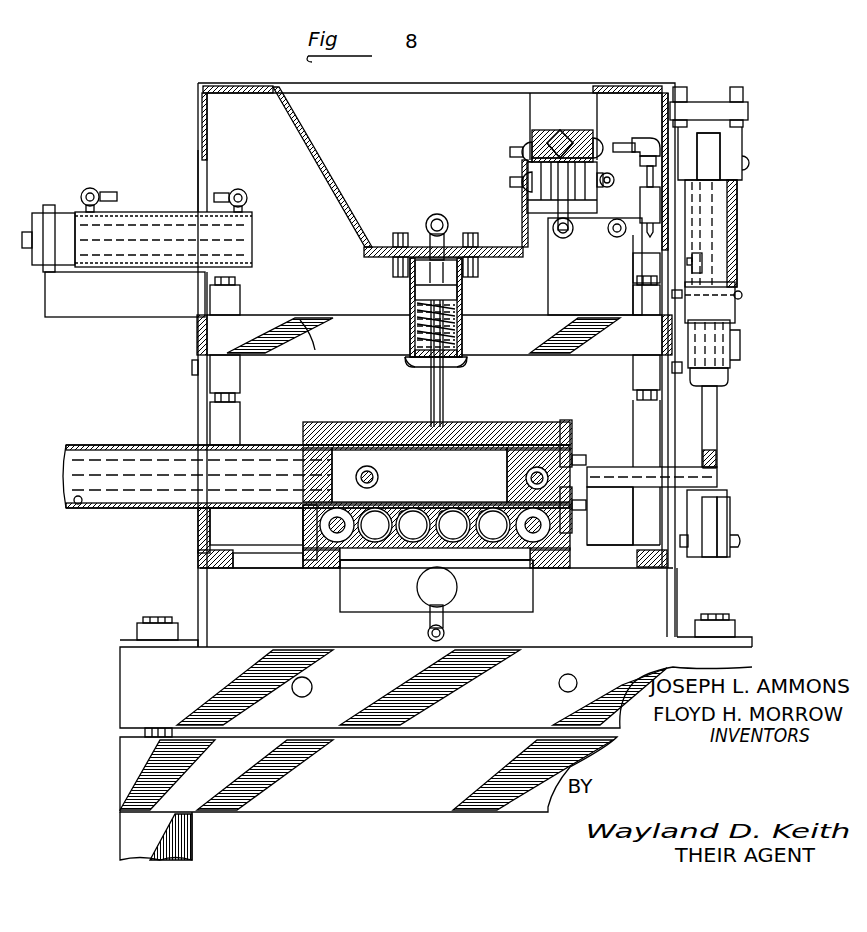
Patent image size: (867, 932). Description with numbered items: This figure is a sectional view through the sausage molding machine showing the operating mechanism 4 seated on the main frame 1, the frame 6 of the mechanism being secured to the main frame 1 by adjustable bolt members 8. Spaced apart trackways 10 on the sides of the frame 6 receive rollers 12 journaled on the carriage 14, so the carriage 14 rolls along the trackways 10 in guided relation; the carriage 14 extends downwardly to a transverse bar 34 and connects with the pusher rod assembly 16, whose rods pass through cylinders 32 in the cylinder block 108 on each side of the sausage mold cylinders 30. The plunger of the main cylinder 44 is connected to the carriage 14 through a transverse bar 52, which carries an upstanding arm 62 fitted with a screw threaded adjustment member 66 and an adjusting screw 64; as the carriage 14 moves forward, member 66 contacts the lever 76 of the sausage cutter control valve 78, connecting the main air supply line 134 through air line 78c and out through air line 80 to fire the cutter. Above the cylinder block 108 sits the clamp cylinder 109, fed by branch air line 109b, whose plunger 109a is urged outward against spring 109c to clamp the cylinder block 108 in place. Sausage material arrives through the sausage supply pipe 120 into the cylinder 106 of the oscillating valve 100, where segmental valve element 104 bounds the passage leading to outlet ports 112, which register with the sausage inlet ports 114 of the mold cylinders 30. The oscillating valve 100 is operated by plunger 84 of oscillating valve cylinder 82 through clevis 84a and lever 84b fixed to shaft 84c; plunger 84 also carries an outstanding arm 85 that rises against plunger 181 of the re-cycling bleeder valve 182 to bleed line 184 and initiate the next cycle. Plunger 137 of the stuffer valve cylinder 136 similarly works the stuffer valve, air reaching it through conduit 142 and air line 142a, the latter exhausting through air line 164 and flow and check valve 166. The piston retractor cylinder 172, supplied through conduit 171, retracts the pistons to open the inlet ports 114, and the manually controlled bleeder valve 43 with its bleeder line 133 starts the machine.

The main frame 1 is at (196, 842).
The operating mechanism 4 is at (196, 107).
The frame 6 is at (198, 173).
The adjustable bolt members 8 is at (150, 620).
The trackways 10 is at (200, 330).
The rollers 12 is at (196, 375).
The carriage 14 is at (246, 430).
The pusher rod assembly 16 is at (320, 528).
The sausage mold cylinders 30 is at (404, 508).
The cylinders 32 is at (315, 505).
The transverse bar 34 is at (205, 522).
The stop and start three-way bleeder valve 43 is at (538, 132).
The main cylinder 44 is at (422, 360).
The transverse bar 52 is at (315, 350).
The upstanding arm 62 is at (548, 296).
The adjusting screw 64 is at (618, 238).
The screw threaded adjustment member 66 is at (548, 228).
The lever 76 is at (571, 230).
The sausage cutter control valve 78 is at (527, 207).
The air line 78c is at (511, 182).
The air line 80 is at (612, 192).
The oscillating valve cylinder 82 is at (735, 220).
The plunger 84 is at (717, 432).
The clevis 84a is at (732, 528).
The lever 84b is at (712, 520).
The shaft 84c is at (705, 462).
The outstanding arm 85 is at (722, 492).
The oscillating valve 100 is at (407, 452).
The segmental valve element 104 is at (332, 464).
The cylinder of oscillating valve 106 is at (80, 503).
The cylinder block 108 is at (522, 422).
The clamp cylinder 109 is at (410, 296).
The plunger 109a is at (443, 378).
The branch air line 109b is at (432, 216).
The spring 109c is at (462, 336).
The outlet ports 112 is at (490, 507).
The sausage inlet ports 114 is at (413, 549).
The sausage supply pipe 120 is at (152, 445).
The air bleeder line 133 is at (605, 140).
The main air supply line 134 is at (516, 145).
The stuffer valve cylinder 136 is at (125, 262).
The plunger 137 is at (24, 232).
The conduit 142 is at (246, 190).
The air line 142a is at (108, 192).
The air line 164 is at (688, 175).
The flow and check valve 166 is at (660, 218).
The conduit 171 is at (445, 632).
The piston retractor cylinder 172 is at (458, 585).
The plunger 181 is at (730, 378).
The re-cycling bleeder valve 182 is at (744, 345).
The bleeder line 184 is at (705, 265).